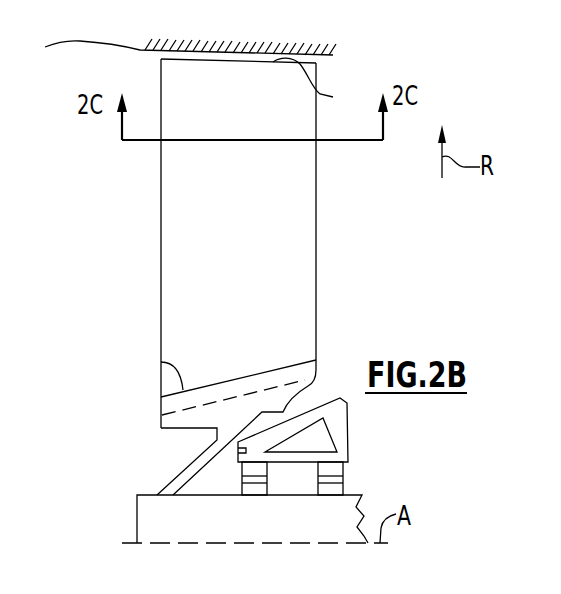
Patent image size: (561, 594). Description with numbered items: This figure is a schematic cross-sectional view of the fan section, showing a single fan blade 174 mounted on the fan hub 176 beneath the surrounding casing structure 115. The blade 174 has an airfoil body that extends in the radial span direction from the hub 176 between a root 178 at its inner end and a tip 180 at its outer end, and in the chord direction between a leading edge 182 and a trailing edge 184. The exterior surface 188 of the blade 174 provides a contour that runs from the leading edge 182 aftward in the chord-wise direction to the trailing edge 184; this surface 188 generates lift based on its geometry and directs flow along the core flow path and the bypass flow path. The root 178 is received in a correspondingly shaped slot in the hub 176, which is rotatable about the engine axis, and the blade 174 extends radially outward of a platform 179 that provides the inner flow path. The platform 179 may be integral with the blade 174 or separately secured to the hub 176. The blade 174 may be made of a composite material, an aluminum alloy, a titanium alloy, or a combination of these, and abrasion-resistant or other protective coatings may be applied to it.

The blade outer air seal / casing surface 115 is at (140, 45).
The fan blade 174 is at (340, 265).
The fan hub 176 is at (184, 477).
The root 178 is at (170, 402).
The platform 179 is at (161, 363).
The tip 180 is at (322, 86).
The leading edge 182 is at (160, 215).
The trailing edge 184 is at (316, 182).
The exterior surface 188 is at (293, 238).